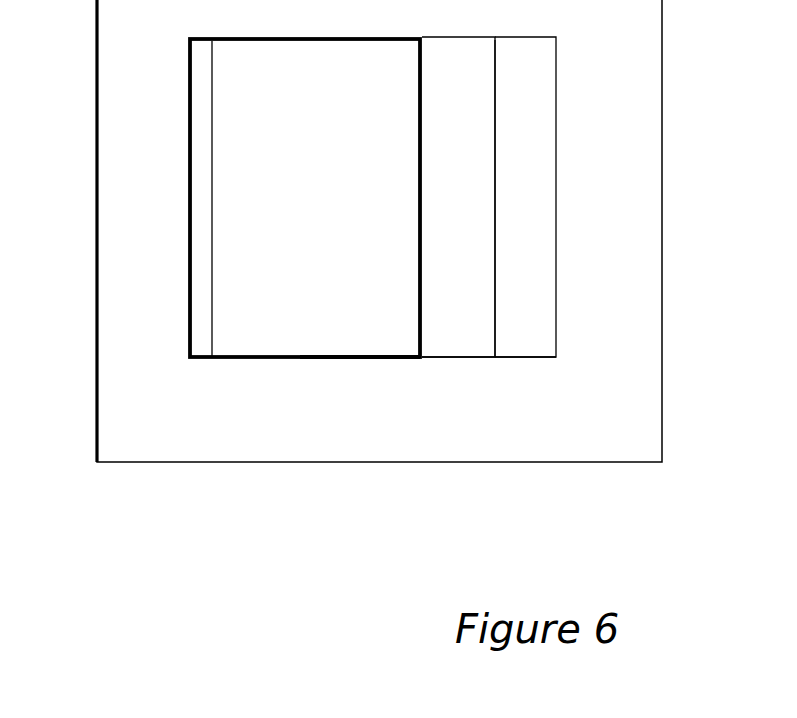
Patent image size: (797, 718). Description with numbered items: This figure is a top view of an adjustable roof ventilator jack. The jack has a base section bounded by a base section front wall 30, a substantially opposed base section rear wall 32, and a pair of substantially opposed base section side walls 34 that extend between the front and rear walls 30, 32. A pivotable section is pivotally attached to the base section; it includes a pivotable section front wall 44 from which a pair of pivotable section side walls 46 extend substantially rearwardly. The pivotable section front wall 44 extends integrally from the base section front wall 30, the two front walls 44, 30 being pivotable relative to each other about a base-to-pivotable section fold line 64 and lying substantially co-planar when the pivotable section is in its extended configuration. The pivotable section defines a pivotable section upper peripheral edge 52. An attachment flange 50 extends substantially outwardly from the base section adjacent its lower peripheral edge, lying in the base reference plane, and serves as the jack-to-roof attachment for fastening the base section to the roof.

The base section front wall 30 is at (531, 223).
The base section rear wall 32 is at (200, 306).
The base section side walls 34 is at (478, 358).
The pivotable section front wall 44 is at (459, 133).
The pivotable section side walls 46 is at (367, 358).
The attachment flange 50 is at (633, 313).
The pivotable section upper peripheral edge 52 is at (422, 90).
The base-to-pivotable section fold line 64 is at (495, 183).